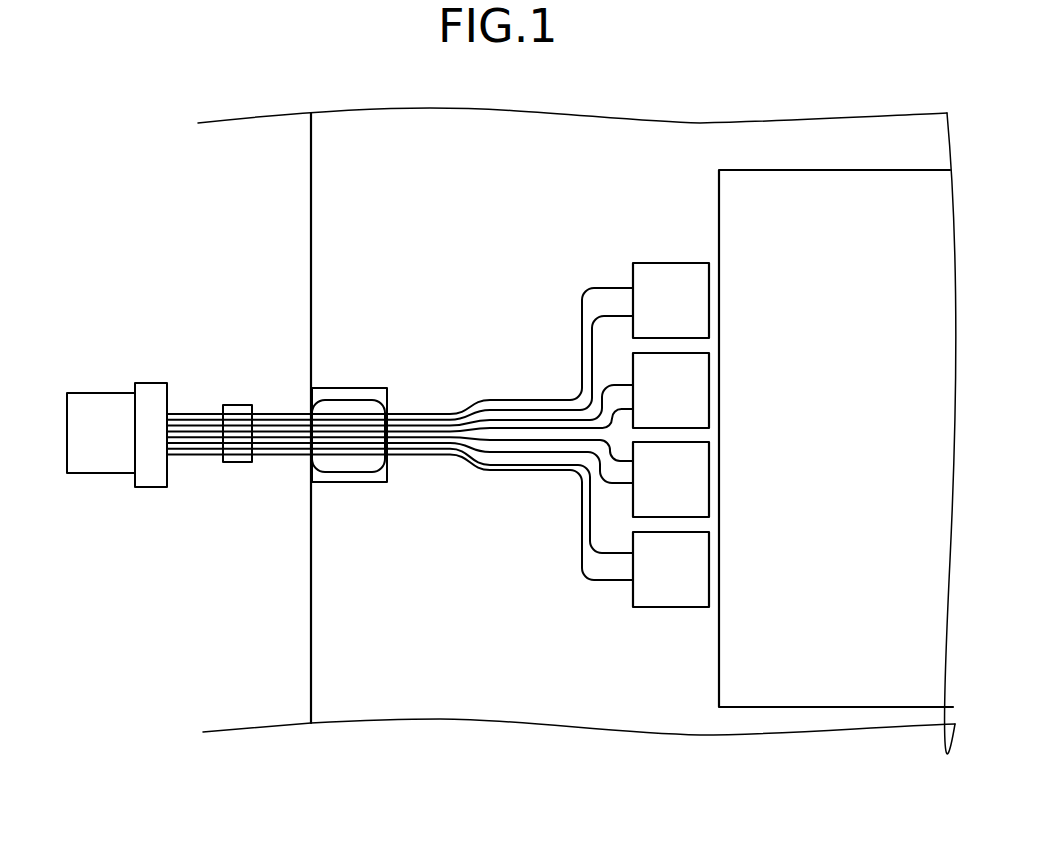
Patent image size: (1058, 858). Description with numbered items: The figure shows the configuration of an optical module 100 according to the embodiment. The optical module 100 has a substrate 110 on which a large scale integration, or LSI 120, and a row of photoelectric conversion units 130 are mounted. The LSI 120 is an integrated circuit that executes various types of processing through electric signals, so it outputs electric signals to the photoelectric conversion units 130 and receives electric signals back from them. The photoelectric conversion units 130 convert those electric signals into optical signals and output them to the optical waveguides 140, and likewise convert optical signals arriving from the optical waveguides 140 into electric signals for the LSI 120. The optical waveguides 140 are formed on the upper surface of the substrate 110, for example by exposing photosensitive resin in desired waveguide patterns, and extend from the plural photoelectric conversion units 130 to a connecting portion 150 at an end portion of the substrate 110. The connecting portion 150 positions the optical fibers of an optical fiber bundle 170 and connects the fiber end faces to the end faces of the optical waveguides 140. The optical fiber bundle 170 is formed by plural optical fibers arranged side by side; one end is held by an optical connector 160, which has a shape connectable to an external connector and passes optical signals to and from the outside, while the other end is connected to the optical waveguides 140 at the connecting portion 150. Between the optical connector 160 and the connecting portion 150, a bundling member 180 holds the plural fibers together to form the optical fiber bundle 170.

The optical module 100 is at (130, 118).
The substrate 110 is at (311, 196).
The large scale integration (LSI) 120 is at (740, 170).
The photoelectric conversion units 130 is at (644, 262).
The optical waveguides 140 is at (508, 389).
The connecting portion 150 is at (356, 377).
The optical connector 160 is at (155, 383).
The optical fiber bundle 170 is at (274, 461).
The bundling member 180 is at (260, 393).